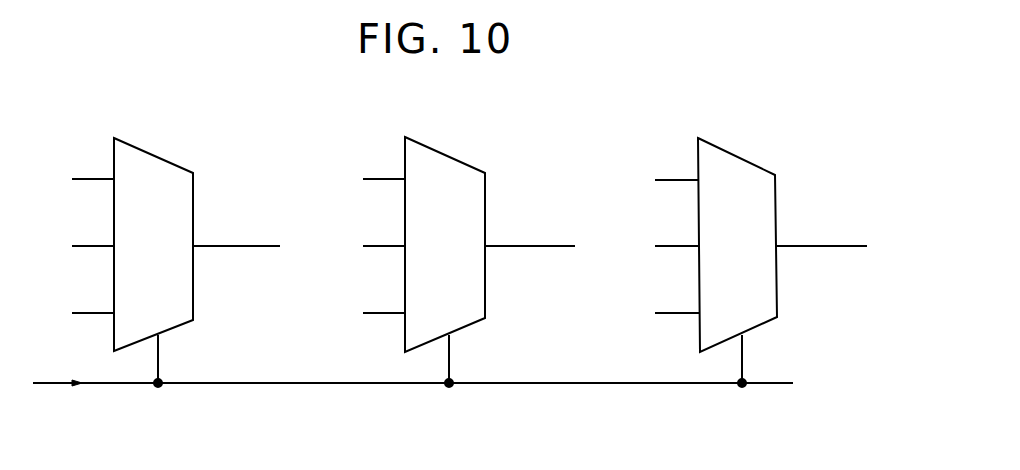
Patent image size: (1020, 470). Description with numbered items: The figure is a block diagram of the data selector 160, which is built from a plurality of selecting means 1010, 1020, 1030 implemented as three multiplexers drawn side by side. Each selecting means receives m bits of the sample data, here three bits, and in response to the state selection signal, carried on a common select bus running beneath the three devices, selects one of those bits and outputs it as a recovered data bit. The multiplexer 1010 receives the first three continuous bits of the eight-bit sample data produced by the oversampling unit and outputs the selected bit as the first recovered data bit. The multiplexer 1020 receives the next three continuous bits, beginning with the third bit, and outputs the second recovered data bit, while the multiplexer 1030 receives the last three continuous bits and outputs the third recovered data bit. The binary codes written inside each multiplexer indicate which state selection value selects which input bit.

The data selector 160 is at (722, 94).
The multiplexer 1010 is at (153, 156).
The multiplexer 1020 is at (445, 155).
The multiplexer 1030 is at (739, 155).